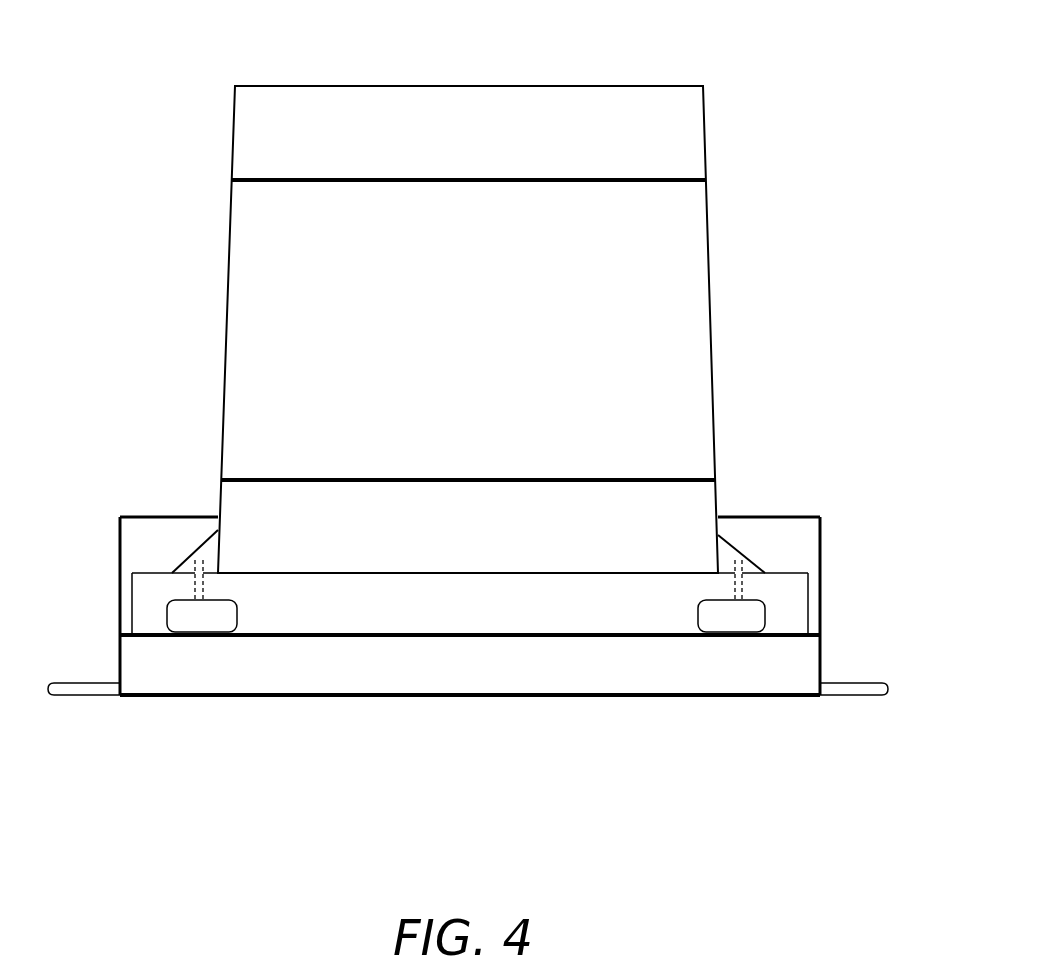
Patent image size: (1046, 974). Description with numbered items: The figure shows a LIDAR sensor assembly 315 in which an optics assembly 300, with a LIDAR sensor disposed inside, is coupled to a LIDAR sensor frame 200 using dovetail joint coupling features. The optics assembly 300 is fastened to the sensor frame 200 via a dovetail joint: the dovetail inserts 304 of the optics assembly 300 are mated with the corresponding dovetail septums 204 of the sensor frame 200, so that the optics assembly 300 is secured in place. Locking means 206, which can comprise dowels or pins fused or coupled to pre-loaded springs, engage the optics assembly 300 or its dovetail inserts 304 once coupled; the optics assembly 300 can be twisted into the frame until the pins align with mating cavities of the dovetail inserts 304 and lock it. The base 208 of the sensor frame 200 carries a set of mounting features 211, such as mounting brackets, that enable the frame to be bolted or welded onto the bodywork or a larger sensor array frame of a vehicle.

The optics assembly 300 is at (235, 60).
The LIDAR sensor assembly 315 is at (779, 164).
The LIDAR sensor frame 200 is at (890, 520).
The dovetail septums 204 is at (162, 515).
The dovetail inserts 304 is at (715, 553).
The locking means 206 is at (175, 616).
The base 208 is at (485, 688).
The mounting features 211 is at (97, 704).